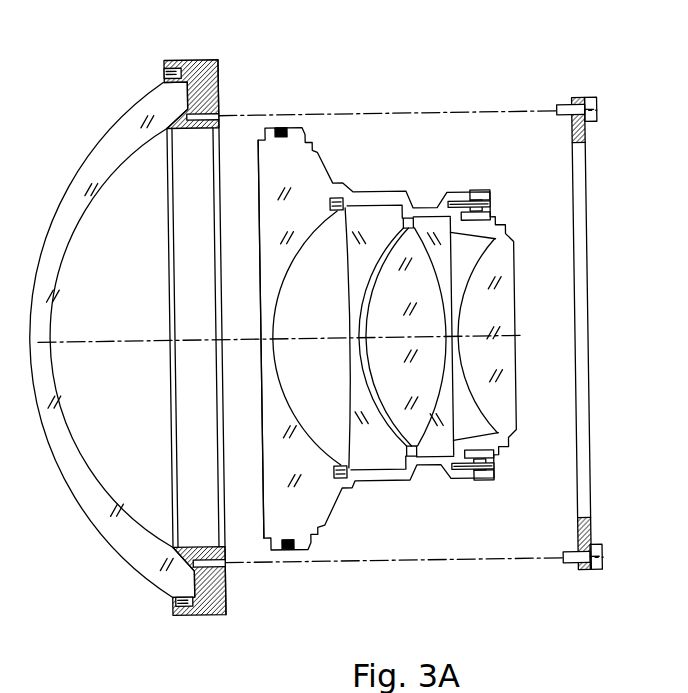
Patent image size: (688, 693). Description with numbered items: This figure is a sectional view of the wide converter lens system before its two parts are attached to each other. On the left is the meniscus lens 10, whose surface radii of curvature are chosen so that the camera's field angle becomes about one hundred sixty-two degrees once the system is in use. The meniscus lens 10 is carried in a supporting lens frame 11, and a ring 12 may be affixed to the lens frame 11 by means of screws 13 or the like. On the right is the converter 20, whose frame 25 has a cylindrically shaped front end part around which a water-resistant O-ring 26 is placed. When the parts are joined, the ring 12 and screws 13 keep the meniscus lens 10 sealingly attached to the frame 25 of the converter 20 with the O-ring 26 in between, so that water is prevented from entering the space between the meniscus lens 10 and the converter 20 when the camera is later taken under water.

The meniscus lens 10 is at (55, 204).
The supporting lens frame 11 is at (217, 78).
The ring 12 is at (586, 132).
The screws 13 is at (596, 114).
The converter 20 is at (397, 494).
The frame 25 is at (313, 175).
The water-resistant O-ring 26 is at (283, 127).